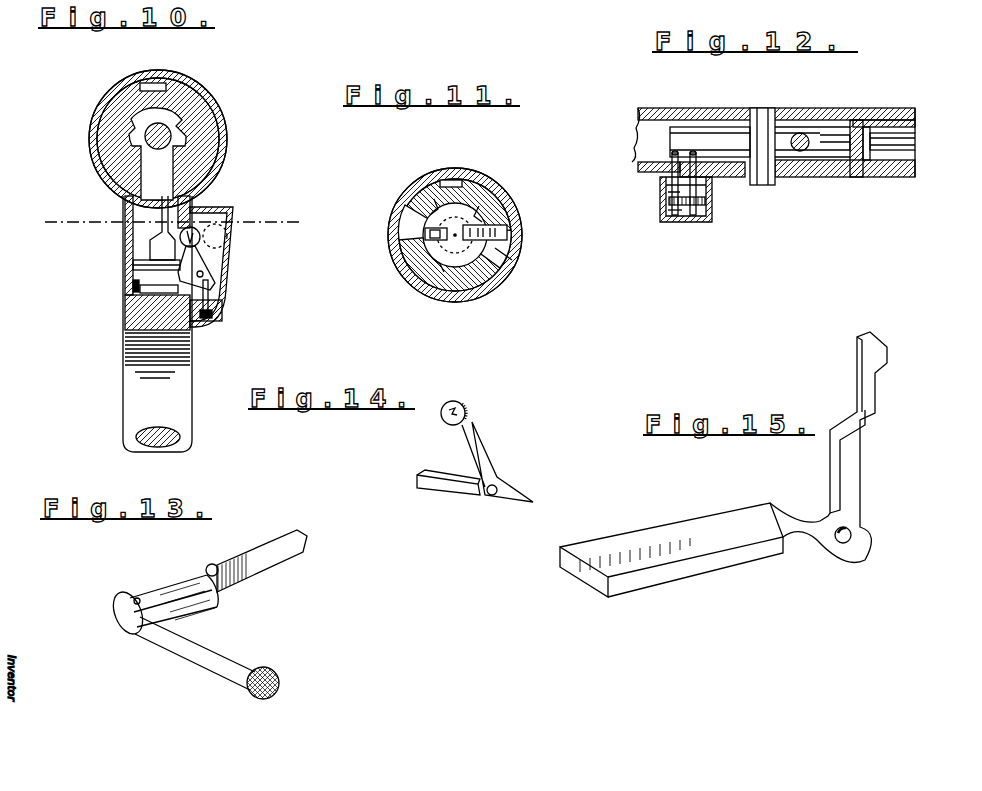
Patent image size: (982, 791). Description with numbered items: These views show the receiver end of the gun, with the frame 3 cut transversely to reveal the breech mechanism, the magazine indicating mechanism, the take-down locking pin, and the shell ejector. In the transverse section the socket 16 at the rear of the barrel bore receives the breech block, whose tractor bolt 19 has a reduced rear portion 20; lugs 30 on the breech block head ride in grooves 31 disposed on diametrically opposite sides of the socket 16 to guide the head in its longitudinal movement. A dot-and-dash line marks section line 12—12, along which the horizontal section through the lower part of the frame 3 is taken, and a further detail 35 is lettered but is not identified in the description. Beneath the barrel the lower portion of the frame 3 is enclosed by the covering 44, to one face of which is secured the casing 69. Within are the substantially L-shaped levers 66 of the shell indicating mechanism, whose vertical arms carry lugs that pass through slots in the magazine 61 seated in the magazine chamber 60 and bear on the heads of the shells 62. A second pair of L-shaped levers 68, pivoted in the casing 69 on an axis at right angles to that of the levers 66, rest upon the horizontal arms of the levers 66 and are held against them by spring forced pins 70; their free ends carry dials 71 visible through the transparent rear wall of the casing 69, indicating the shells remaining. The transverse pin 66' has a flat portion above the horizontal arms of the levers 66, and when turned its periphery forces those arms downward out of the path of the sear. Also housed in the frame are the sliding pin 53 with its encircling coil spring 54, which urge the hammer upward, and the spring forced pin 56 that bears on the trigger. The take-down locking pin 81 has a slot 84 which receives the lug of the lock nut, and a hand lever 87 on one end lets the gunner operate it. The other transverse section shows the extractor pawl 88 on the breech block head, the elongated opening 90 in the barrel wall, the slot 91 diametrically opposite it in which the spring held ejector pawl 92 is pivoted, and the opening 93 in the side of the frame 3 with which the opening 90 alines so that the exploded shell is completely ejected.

In FIG. 10, the frame 3 is at (227, 139).
In FIG. 11, the frame 3 is at (514, 222).
In FIG. 12, the frame 3 is at (790, 113).
In FIG. 10, the section line 12 is at (167, 221).
In FIG. 10, the socket 16 is at (215, 130).
In FIG. 10, the tractor bolt 19 is at (165, 124).
In FIG. 10, the reduced portion 20 is at (140, 136).
In FIG. 11, the lugs 30 is at (498, 197).
In FIG. 10, the grooves 31 is at (186, 124).
In FIG. 11, the grooves 31 is at (470, 190).
In FIG. 10, the notch 35 is at (155, 83).
In FIG. 11, the notch 35 is at (450, 182).
In FIG. 10, the covering 44 is at (190, 212).
In FIG. 12, the covering 44 is at (856, 177).
In FIG. 12, the sliding pin 53 is at (808, 134).
In FIG. 12, the coil spring 54 is at (790, 160).
In FIG. 10, the spring forced pin 56 is at (150, 310).
In FIG. 12, the magazine chamber 60 is at (880, 177).
In FIG. 12, the magazine 61 is at (880, 118).
In FIG. 12, the shells 62 is at (895, 140).
In FIG. 10, the levers 66 is at (129, 233).
In FIG. 12, the levers 66 is at (763, 136).
In FIG. 15, the levers 66 is at (723, 464).
In FIG. 10, the pin 66' is at (123, 283).
In FIG. 12, the pin 66' is at (754, 128).
In FIG. 10, the levers 68 is at (212, 270).
In FIG. 12, the levers 68 is at (668, 210).
In FIG. 14, the levers 68 is at (485, 457).
In FIG. 10, the casing 69 is at (233, 250).
In FIG. 12, the casing 69 is at (664, 220).
In FIG. 10, the spring forced pins 70 is at (228, 293).
In FIG. 12, the spring forced pins 70 is at (697, 215).
In FIG. 10, the dials 71 is at (198, 230).
In FIG. 12, the dials 71 is at (668, 186).
In FIG. 14, the dials 71 is at (462, 405).
In FIG. 13, the take-down locking pin 81 is at (177, 585).
In FIG. 13, the slot 84 is at (215, 565).
In FIG. 13, the hand lever 87 is at (245, 660).
In FIG. 11, the extractor pawl 88 is at (428, 236).
In FIG. 11, the elongated opening 90 is at (420, 212).
In FIG. 11, the slot 91 is at (500, 262).
In FIG. 11, the ejector pawl 92 is at (510, 237).
In FIG. 11, the opening 93 is at (400, 218).